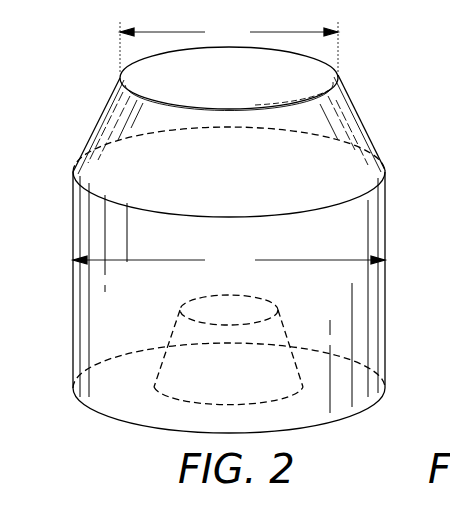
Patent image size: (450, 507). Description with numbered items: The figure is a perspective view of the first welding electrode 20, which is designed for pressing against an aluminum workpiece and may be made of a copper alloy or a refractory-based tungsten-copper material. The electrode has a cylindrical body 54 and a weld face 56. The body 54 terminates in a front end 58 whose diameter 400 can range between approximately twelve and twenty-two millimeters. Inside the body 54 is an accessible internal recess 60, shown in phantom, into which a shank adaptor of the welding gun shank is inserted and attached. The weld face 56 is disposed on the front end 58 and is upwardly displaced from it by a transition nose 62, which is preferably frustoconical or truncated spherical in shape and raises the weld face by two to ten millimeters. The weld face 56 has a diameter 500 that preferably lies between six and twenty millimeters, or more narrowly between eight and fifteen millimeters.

The first welding electrode 20 is at (58, 233).
The body 54 is at (356, 237).
The weld face 56 is at (145, 68).
The front end 58 is at (385, 170).
The internal recess 60 is at (178, 325).
The transition nose 62 is at (342, 122).
The diameter of the weld face 500 is at (229, 47).
The diameter of the front end 400 is at (229, 261).